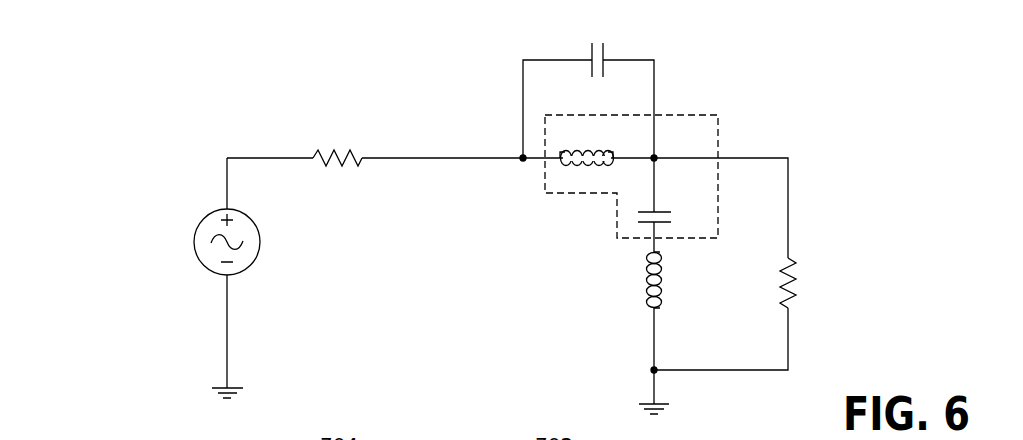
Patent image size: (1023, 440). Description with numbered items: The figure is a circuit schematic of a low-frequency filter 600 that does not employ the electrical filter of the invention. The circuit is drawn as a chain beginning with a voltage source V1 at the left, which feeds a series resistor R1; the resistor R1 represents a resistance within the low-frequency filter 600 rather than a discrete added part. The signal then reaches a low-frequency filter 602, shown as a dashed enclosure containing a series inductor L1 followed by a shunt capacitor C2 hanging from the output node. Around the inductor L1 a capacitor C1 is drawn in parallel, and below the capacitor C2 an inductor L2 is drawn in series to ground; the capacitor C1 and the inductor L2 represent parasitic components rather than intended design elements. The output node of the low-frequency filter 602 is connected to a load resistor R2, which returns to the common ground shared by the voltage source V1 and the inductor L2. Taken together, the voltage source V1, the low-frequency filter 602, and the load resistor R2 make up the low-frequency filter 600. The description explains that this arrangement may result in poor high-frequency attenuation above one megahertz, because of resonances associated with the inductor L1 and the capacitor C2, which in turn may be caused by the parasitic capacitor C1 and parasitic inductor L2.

The low-frequency filter 600 is at (506, 228).
The low-frequency filter 602 is at (681, 183).
The voltage source V1 is at (239, 278).
The resistor R1 is at (337, 140).
The capacitor C1 is at (598, 74).
The inductor L1 is at (587, 145).
The capacitor C2 is at (670, 211).
The inductor L2 is at (669, 280).
The load resistor R2 is at (768, 283).